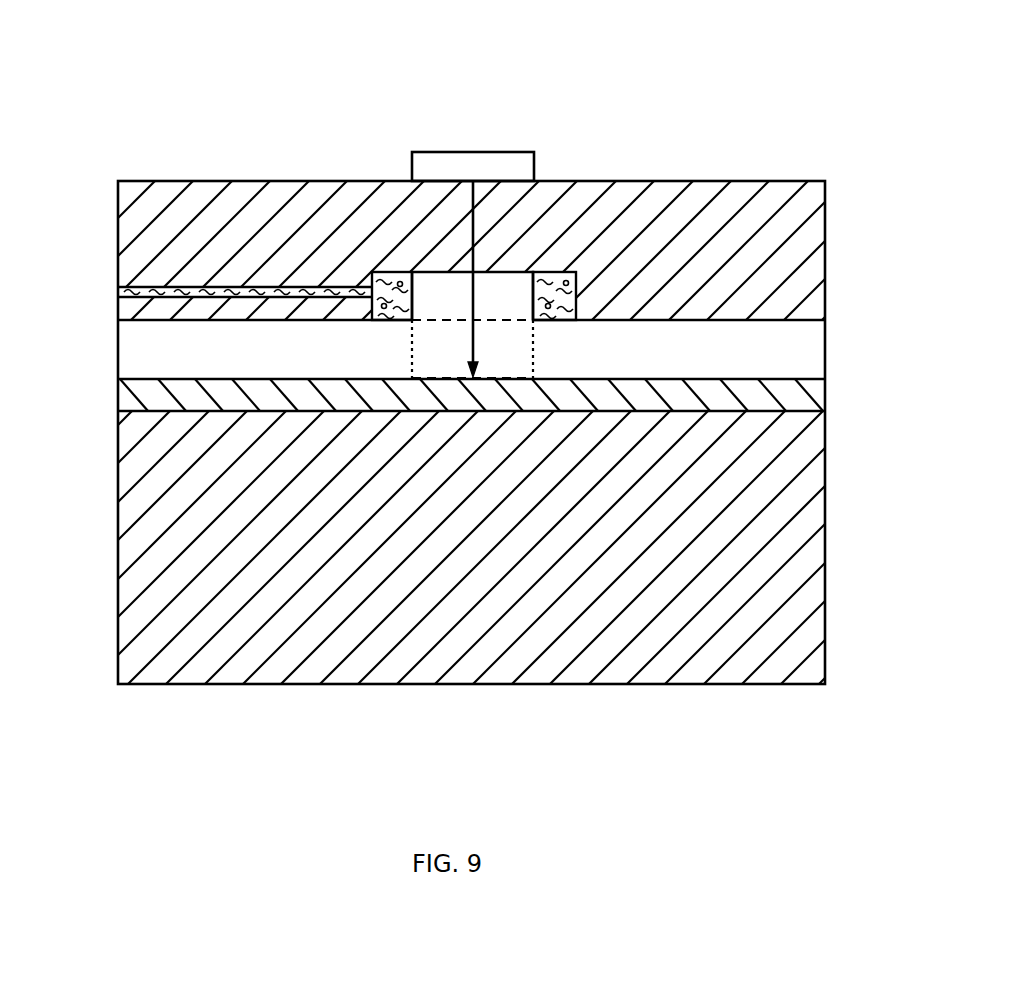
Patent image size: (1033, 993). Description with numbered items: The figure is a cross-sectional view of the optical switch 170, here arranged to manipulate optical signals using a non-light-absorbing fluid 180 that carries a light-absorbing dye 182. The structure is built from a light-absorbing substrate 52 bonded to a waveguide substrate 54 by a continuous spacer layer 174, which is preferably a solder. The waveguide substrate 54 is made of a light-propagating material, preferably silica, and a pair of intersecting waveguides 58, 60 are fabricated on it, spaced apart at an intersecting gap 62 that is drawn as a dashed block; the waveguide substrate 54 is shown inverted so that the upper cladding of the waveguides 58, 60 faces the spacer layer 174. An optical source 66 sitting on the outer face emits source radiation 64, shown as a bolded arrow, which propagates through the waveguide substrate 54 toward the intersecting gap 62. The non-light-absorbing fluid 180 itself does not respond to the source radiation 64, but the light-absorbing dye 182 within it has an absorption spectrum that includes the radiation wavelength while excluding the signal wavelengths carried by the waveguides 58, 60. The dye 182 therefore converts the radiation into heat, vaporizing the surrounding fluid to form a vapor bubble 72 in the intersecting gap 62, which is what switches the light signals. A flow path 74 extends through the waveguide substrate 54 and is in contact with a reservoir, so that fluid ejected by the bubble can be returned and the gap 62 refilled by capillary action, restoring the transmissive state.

The optical switch 170 is at (773, 59).
The light-absorbing substrate 52 is at (815, 628).
The waveguide substrate 54 is at (815, 268).
The waveguide 58 is at (128, 354).
The waveguide 60 is at (815, 348).
The intersecting gap 62 is at (503, 348).
The source radiation 64 is at (475, 227).
The optical source 66 is at (472, 152).
The vapor bubble 72 is at (443, 277).
The flow path 74 is at (118, 291).
The continuous spacer layer 174 is at (814, 401).
The non-light-absorbing fluid 180 is at (375, 274).
The light-absorbing dye 182 is at (577, 273).